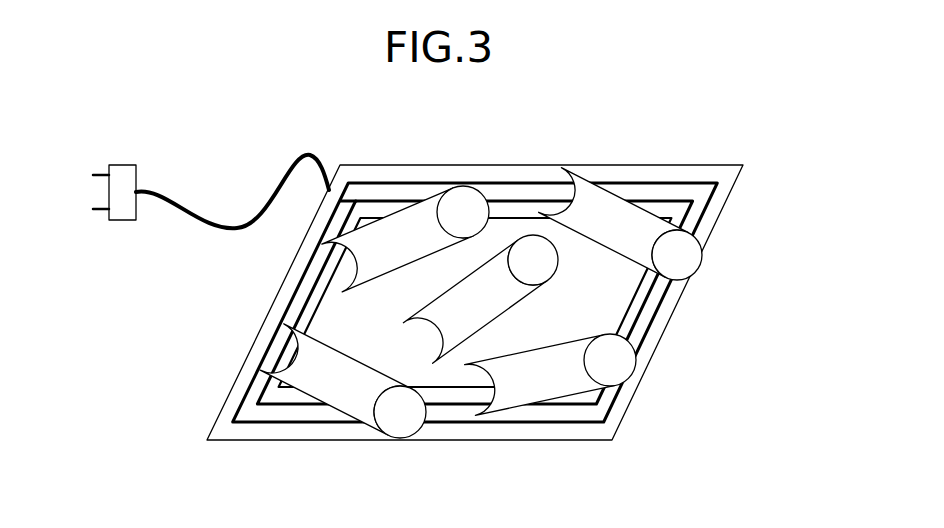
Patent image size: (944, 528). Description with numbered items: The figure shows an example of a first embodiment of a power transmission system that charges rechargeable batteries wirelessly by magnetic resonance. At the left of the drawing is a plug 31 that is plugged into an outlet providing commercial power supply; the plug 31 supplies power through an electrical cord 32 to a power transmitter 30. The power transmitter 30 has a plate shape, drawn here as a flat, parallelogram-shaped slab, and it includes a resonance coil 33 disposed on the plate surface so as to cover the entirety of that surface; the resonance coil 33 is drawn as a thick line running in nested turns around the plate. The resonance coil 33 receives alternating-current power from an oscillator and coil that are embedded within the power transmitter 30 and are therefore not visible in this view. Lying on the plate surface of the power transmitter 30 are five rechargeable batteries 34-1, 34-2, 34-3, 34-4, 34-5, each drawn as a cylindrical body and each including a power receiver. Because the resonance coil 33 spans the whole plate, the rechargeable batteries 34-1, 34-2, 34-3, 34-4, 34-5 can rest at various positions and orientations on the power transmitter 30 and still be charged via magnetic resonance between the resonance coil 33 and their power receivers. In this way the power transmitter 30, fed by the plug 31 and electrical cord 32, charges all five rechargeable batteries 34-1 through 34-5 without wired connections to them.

The power transmitter 30 is at (483, 165).
The plug 31 is at (126, 165).
The electrical cord 32 is at (195, 199).
The resonance coil 33 is at (683, 183).
The rechargeable battery 34-1 is at (246, 347).
The rechargeable battery 34-2 is at (305, 263).
The rechargeable battery 34-3 is at (507, 317).
The rechargeable battery 34-4 is at (702, 257).
The rechargeable battery 34-5 is at (637, 366).